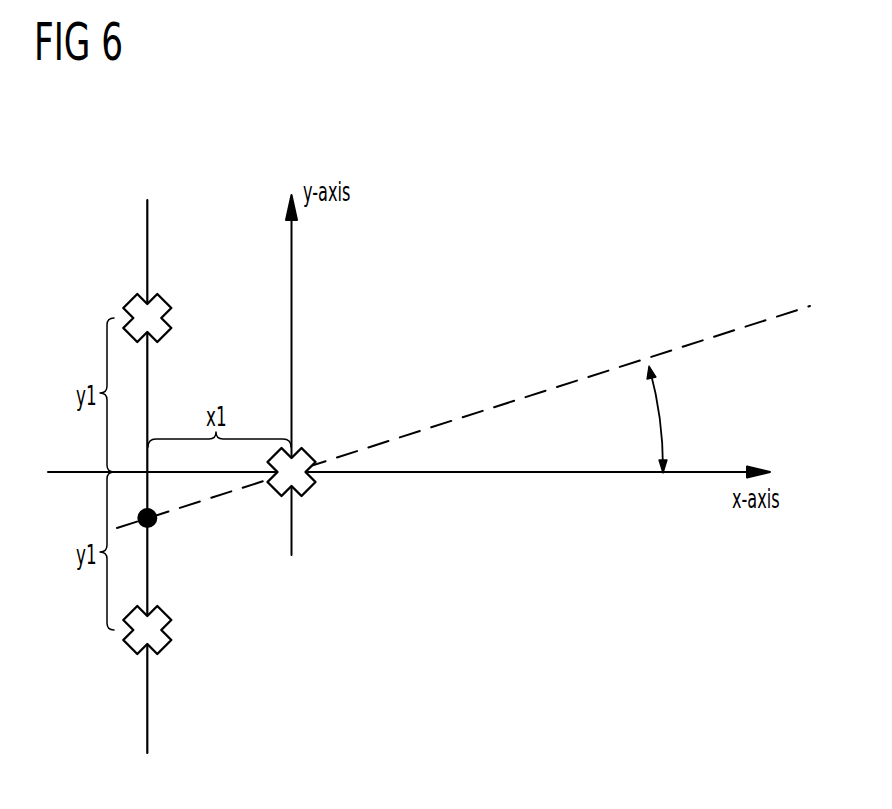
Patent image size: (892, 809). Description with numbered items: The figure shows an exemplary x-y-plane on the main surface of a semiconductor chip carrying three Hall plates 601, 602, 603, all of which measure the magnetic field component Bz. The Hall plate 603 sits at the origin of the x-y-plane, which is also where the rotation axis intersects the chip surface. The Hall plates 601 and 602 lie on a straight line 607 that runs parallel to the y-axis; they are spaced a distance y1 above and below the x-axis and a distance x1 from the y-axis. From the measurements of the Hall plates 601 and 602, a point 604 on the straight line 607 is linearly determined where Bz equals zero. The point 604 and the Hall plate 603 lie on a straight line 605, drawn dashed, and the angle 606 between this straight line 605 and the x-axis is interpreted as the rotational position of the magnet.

The Hall plate 601 is at (128, 300).
The Hall plate 602 is at (170, 625).
The Hall plate 603 is at (312, 492).
The point 604 is at (157, 524).
The straight line 605 is at (528, 398).
The angle 606 is at (661, 423).
The straight line 607 is at (145, 725).